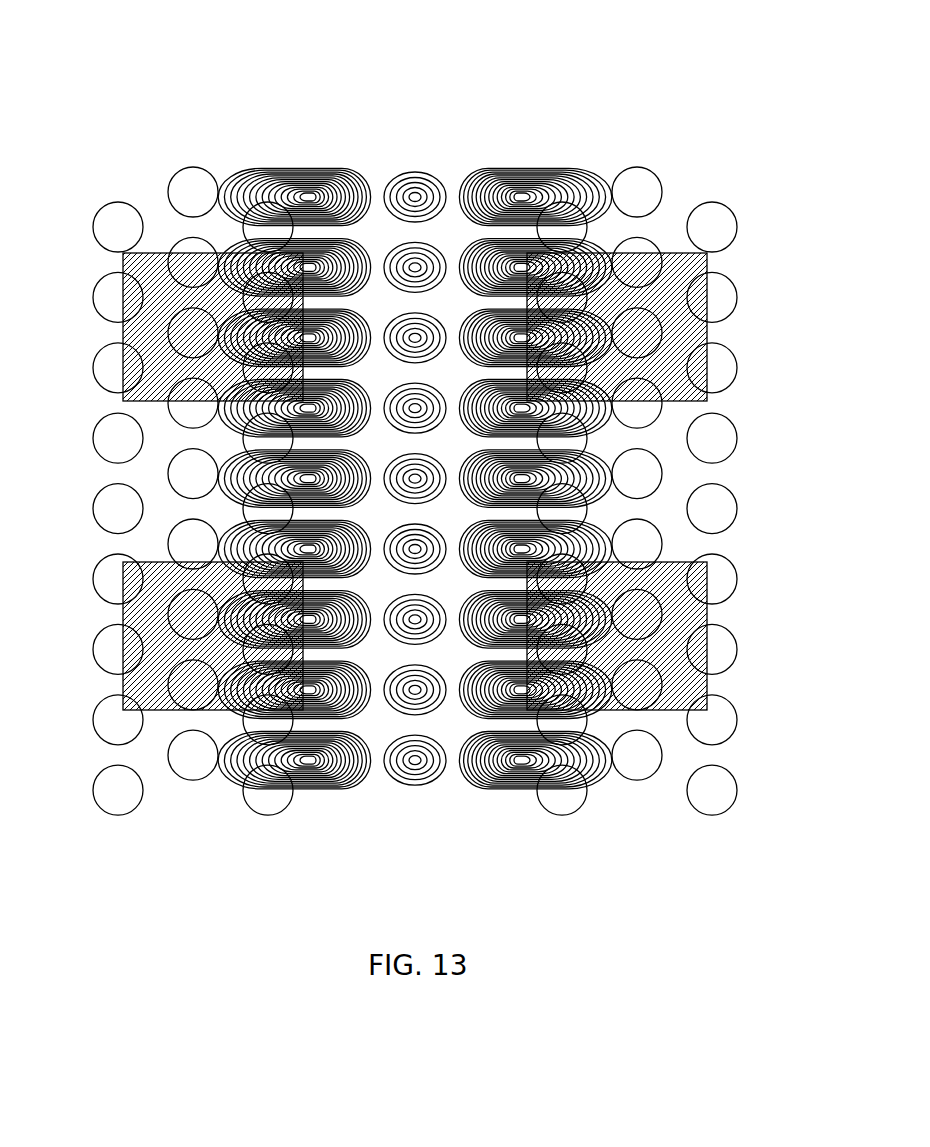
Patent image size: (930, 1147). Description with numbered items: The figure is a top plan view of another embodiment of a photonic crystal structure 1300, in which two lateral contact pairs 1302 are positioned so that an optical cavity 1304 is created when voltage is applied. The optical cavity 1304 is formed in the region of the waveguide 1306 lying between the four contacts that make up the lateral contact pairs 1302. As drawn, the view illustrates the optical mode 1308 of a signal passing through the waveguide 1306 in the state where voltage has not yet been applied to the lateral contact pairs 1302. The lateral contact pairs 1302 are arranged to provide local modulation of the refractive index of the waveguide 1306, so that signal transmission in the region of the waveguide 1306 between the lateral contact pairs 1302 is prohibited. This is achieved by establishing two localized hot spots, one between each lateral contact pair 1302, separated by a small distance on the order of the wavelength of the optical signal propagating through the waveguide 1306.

The photonic crystal structure 1300 is at (218, 86).
The lateral contact pairs 1302 is at (123, 262).
The optical cavity 1304 is at (418, 442).
The waveguide 1306 is at (458, 798).
The optical mode 1308 is at (612, 148).